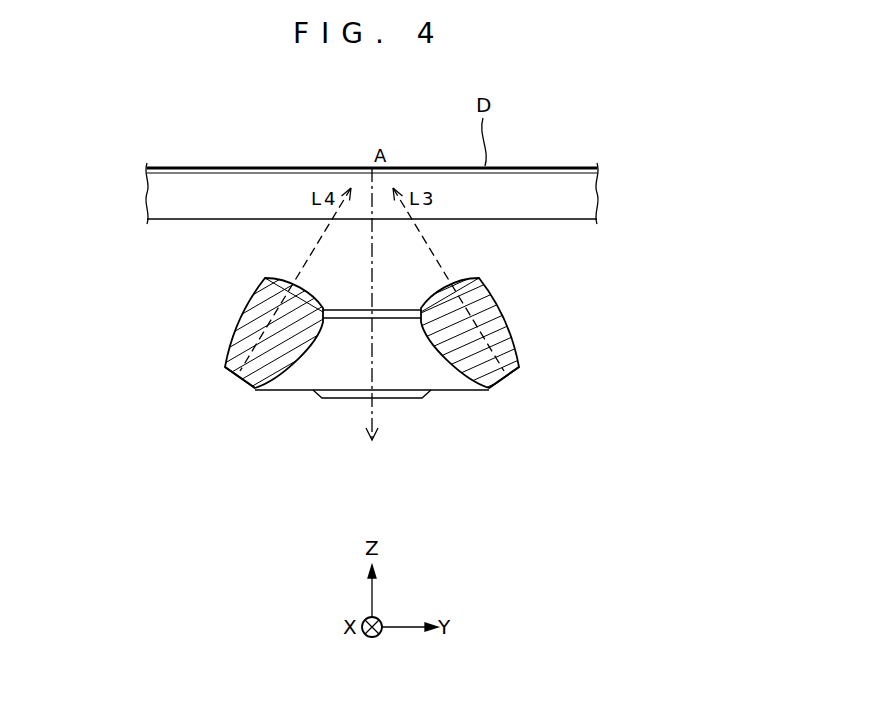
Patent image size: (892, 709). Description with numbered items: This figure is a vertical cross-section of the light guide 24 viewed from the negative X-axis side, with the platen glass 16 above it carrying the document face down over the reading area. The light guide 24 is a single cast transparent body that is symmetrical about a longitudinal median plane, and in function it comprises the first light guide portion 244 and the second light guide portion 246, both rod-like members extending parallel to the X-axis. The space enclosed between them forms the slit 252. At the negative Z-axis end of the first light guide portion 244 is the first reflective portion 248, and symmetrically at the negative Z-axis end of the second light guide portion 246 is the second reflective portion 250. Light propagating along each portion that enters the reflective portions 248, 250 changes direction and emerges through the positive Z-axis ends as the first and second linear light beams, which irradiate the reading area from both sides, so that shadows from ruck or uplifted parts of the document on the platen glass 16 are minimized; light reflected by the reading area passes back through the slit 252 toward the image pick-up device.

The platen glass 16 is at (503, 219).
The light guide 24 is at (191, 341).
The first light guide portion 244 is at (506, 327).
The second light guide portion 246 is at (257, 297).
The first reflective portion 248 is at (501, 381).
The second reflective portion 250 is at (245, 382).
The slit 252 is at (410, 377).